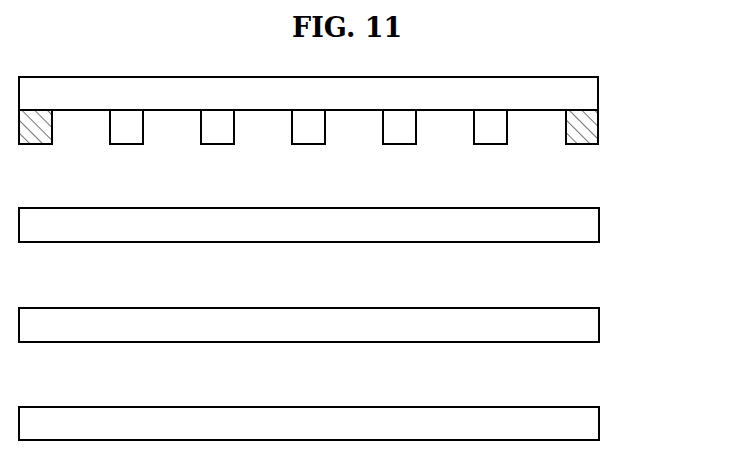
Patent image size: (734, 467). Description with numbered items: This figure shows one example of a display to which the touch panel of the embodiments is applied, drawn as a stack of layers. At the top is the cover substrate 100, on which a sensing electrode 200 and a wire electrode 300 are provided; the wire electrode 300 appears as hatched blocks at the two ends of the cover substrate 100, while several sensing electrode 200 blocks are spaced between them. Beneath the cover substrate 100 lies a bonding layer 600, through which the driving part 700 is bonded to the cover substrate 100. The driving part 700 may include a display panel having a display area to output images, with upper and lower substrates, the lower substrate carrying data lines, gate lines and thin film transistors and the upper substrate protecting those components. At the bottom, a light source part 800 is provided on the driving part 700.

The cover substrate 100 is at (588, 94).
The sensing electrode 200 is at (494, 135).
The wire electrode 300 is at (589, 127).
The bonding layer 600 is at (588, 225).
The driving part 700 is at (588, 325).
The light source part 800 is at (588, 424).